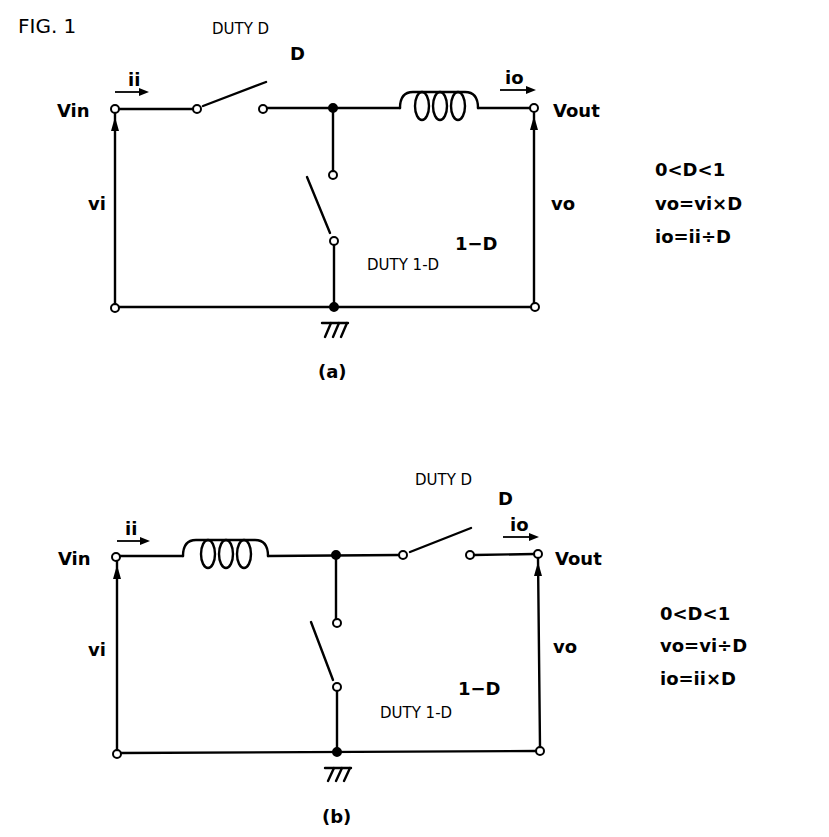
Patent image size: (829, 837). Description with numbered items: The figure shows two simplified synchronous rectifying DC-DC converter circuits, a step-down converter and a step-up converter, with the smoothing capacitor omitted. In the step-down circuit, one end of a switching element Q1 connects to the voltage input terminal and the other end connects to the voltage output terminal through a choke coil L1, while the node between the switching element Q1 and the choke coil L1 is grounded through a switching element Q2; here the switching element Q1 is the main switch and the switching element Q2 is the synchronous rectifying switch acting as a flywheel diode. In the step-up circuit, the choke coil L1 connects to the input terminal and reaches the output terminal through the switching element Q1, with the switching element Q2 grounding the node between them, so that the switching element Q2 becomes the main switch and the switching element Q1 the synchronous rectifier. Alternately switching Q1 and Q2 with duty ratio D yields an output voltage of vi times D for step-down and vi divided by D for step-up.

The switching element Q1 is at (333, 313).
The switching element Q2 is at (343, 431).
The choke coil L1 is at (330, 319).